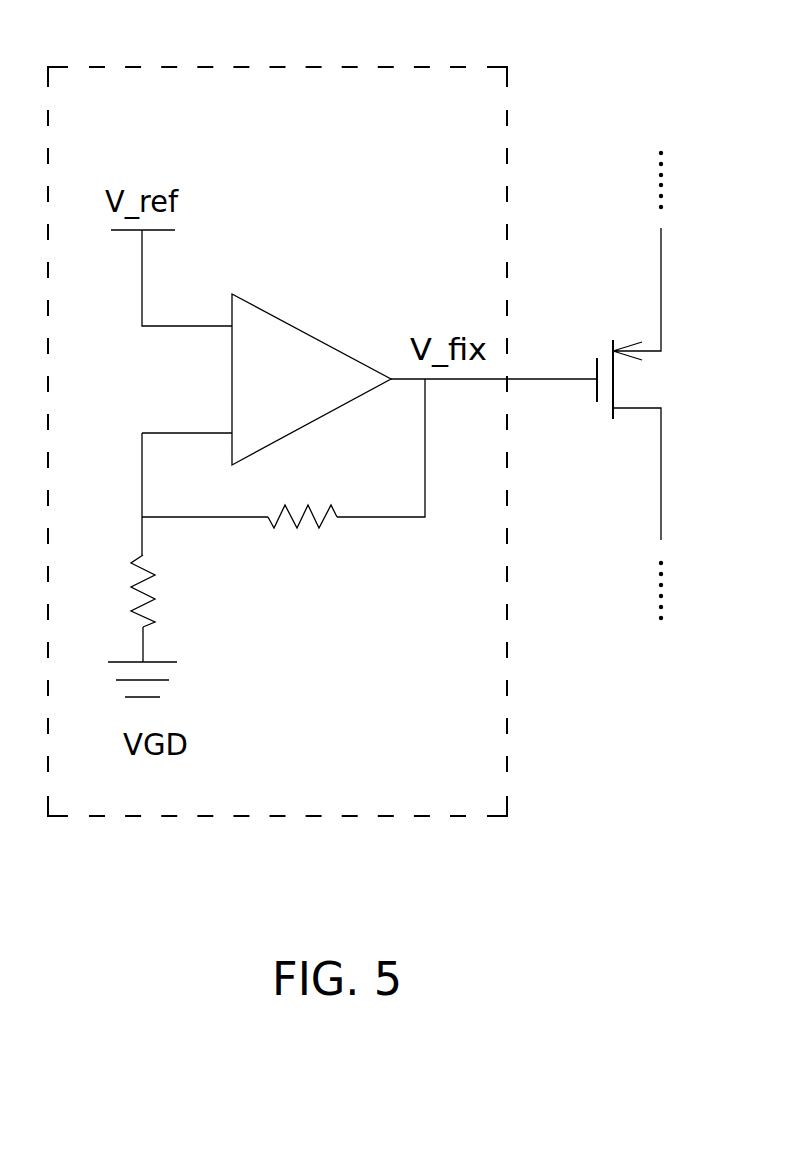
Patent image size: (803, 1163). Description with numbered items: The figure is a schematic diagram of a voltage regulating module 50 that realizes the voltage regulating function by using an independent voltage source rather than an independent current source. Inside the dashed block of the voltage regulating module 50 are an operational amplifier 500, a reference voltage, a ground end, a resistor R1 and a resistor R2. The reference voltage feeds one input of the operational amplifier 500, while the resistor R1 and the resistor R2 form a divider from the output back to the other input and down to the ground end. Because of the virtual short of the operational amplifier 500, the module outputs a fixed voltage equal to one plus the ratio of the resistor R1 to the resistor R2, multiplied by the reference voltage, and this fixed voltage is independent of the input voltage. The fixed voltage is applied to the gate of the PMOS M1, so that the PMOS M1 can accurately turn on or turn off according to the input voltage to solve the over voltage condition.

The voltage regulating module 50 is at (240, 67).
The operational amplifier 500 is at (310, 335).
The PMOS M1 is at (632, 427).
The resistor R1 is at (302, 538).
The resistor R2 is at (121, 591).